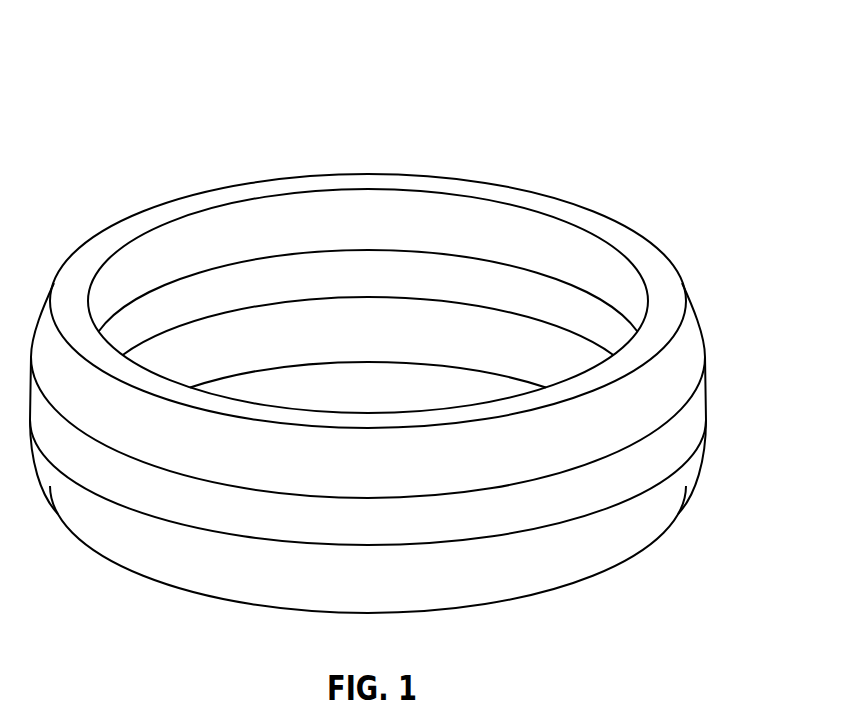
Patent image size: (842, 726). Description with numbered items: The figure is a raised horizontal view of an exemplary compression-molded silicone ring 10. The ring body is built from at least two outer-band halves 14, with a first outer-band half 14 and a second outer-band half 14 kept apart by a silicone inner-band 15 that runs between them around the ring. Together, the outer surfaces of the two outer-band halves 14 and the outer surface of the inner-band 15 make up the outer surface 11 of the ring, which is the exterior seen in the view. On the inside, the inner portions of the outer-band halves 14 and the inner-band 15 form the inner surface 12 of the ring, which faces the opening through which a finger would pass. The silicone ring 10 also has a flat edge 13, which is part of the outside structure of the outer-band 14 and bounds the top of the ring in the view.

The compression-molded silicone ring 10 is at (400, 323).
The outer surface 11 is at (410, 482).
The inner surface 12 is at (393, 336).
The flat edge 13 is at (579, 217).
The outer-band half 14 is at (690, 349).
The silicone inner-band 15 is at (693, 421).